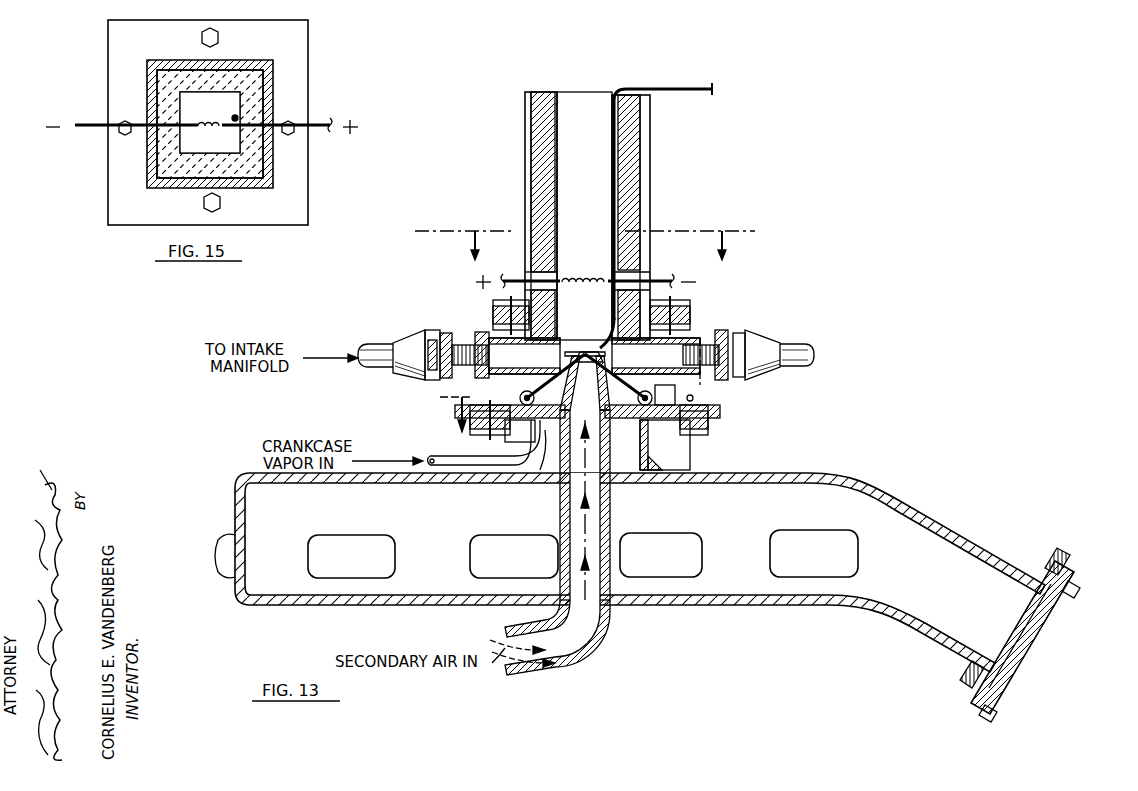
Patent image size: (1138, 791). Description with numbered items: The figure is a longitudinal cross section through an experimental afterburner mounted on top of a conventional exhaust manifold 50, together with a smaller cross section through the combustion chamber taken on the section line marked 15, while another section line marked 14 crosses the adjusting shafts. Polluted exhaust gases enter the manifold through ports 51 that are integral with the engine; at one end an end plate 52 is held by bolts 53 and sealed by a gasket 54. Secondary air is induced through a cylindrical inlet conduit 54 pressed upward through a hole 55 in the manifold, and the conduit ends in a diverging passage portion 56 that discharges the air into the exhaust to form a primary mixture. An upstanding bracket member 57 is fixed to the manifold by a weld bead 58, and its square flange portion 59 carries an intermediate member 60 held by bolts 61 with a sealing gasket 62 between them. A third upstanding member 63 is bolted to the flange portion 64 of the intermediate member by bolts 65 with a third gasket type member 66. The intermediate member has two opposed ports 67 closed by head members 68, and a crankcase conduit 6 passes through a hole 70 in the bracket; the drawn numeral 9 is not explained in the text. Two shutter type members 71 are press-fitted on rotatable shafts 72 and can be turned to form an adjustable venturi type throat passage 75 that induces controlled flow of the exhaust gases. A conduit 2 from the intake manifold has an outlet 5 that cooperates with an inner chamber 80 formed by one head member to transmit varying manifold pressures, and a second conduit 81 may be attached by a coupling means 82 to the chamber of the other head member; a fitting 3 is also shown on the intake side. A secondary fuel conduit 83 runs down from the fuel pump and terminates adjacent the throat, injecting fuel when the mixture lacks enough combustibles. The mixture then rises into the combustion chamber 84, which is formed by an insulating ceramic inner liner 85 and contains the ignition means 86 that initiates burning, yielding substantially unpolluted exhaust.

In FIG. 13, the conduit 2 is at (812, 350).
In FIG. 13, the hose fitting 3 is at (766, 370).
In FIG. 13, the outlet 5 is at (670, 391).
In FIG. 13, the conduit 6 is at (430, 458).
In FIG. 13, the tube fitting 9 is at (538, 464).
In FIG. 13, the section line 14 is at (476, 395).
In FIG. 13, the section line 15 is at (487, 217).
In FIG. 13, the exhaust manifold 50 is at (878, 487).
In FIG. 13, the ports 51 is at (792, 530).
In FIG. 13, the end plate 52 is at (1040, 640).
In FIG. 13, the bolts 53 is at (1078, 592).
In FIG. 13, the inlet conduit 54 is at (612, 500).
In FIG. 13, the hole 55 is at (603, 632).
In FIG. 13, the diverging passage portion 56 is at (534, 402).
In FIG. 13, the upstanding bracket member 57 is at (665, 445).
In FIG. 13, the weld bead 58 is at (660, 466).
In FIG. 13, the flange portion 59 is at (706, 436).
In FIG. 13, the intermediate member 60 is at (700, 397).
In FIG. 13, the bolts 61 is at (710, 412).
In FIG. 13, the sealing means 62 is at (470, 420).
In FIG. 15, the third upstanding member 63 is at (176, 189).
In FIG. 13, the third upstanding member 63 is at (652, 174).
In FIG. 13, the flange portion 64 is at (672, 318).
In FIG. 13, the bolts 65 is at (672, 300).
In FIG. 13, the third gasket type member 66 is at (496, 316).
In FIG. 13, the ports 67 is at (548, 366).
In FIG. 13, the head members 68 is at (480, 334).
In FIG. 13, the hole 70 is at (505, 437).
In FIG. 13, the shutter type members 71 is at (562, 372).
In FIG. 13, the rotatable shafts 72 is at (548, 418).
In FIG. 13, the venturi type throat passage 75 is at (588, 350).
In FIG. 13, the inner chamber 80 is at (512, 364).
In FIG. 13, the second conduit 81 is at (380, 350).
In FIG. 13, the coupling means 82 is at (447, 328).
In FIG. 15, the secondary fuel conduit 83 is at (238, 118).
In FIG. 13, the secondary fuel conduit 83 is at (642, 90).
In FIG. 15, the combustion chamber 84 is at (240, 155).
In FIG. 13, the combustion chamber 84 is at (588, 198).
In FIG. 13, the ceramic inner liner 85 is at (556, 172).
In FIG. 15, the ignition means 86 is at (206, 122).
In FIG. 13, the ignition means 86 is at (585, 286).